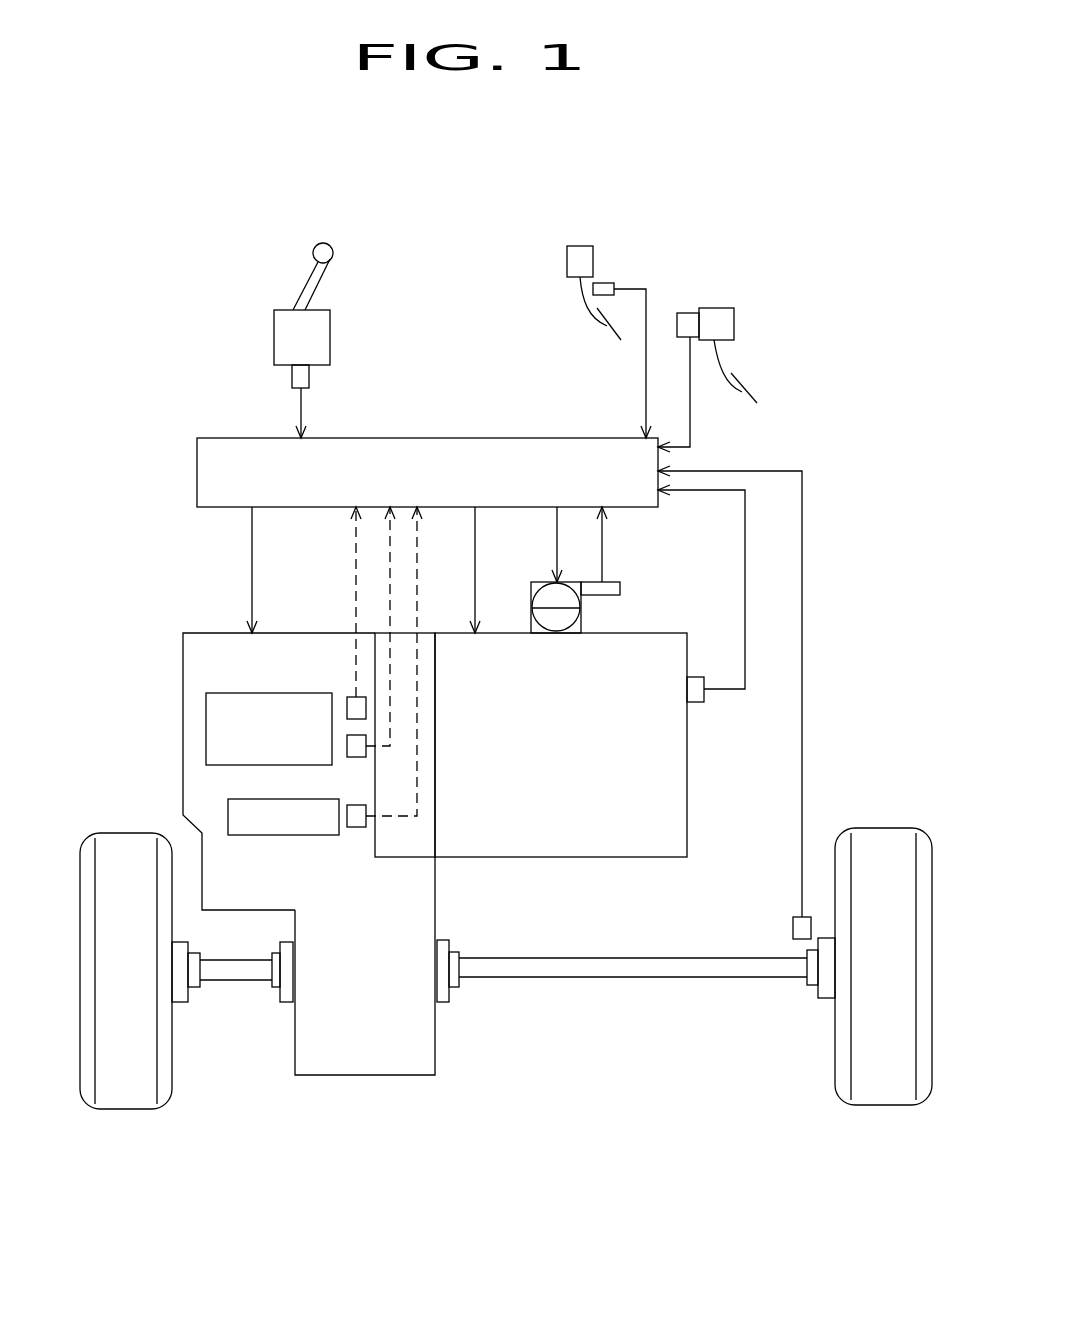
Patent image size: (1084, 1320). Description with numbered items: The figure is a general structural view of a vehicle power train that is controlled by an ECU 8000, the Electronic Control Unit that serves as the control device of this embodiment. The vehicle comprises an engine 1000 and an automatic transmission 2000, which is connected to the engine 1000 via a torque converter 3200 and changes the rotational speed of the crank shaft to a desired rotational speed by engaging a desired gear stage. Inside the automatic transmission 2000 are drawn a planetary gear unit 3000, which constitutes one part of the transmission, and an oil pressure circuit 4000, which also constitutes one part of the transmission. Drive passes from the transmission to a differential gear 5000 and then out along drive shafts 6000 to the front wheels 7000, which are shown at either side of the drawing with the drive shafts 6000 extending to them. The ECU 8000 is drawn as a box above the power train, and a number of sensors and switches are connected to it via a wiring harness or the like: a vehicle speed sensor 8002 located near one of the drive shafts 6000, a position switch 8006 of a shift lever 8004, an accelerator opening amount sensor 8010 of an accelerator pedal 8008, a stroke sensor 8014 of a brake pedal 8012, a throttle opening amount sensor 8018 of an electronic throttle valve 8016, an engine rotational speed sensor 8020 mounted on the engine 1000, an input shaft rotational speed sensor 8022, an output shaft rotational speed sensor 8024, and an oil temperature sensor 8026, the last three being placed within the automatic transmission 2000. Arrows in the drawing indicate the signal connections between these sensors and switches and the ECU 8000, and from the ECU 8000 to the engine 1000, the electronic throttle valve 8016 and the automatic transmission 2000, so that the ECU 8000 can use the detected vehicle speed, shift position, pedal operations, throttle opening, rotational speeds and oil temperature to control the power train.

The engine 1000 is at (625, 860).
The automatic transmission 2000 is at (195, 633).
The planetary gear unit 3000 is at (206, 731).
The torque converter 3200 is at (403, 858).
The oil pressure circuit 4000 is at (275, 835).
The differential gear 5000 is at (363, 1077).
The drive shafts 6000 is at (232, 983).
The front wheels 7000 is at (115, 1112).
The ECU 8000 is at (540, 437).
The vehicle speed sensor 8002 is at (793, 925).
The shift lever 8004 is at (333, 263).
The position switch 8006 is at (292, 380).
The accelerator pedal 8008 is at (586, 305).
The accelerator opening amount sensor 8010 is at (605, 283).
The brake pedal 8012 is at (720, 358).
The stroke sensor 8014 is at (690, 313).
The electronic throttle valve 8016 is at (581, 627).
The throttle opening amount sensor 8018 is at (620, 592).
The engine rotational speed sensor 8020 is at (695, 702).
The input shaft rotational speed sensor 8022 is at (353, 697).
The output shaft rotational speed sensor 8024 is at (355, 757).
The oil temperature sensor 8026 is at (356, 828).